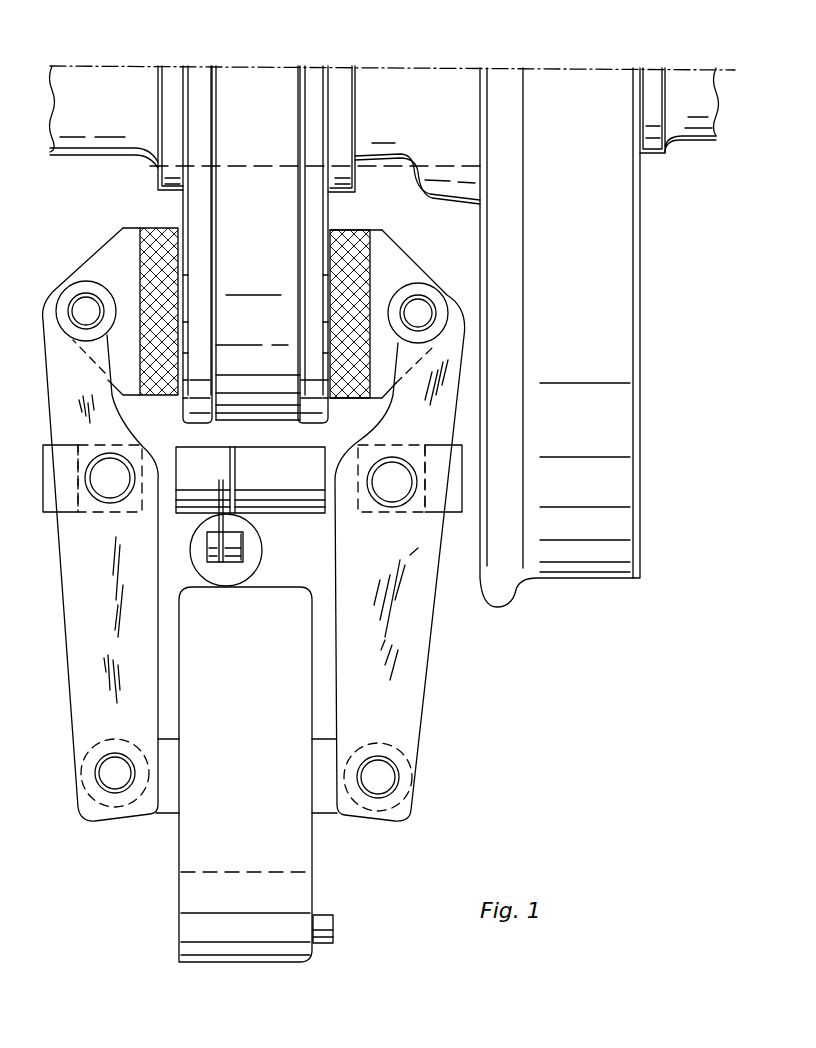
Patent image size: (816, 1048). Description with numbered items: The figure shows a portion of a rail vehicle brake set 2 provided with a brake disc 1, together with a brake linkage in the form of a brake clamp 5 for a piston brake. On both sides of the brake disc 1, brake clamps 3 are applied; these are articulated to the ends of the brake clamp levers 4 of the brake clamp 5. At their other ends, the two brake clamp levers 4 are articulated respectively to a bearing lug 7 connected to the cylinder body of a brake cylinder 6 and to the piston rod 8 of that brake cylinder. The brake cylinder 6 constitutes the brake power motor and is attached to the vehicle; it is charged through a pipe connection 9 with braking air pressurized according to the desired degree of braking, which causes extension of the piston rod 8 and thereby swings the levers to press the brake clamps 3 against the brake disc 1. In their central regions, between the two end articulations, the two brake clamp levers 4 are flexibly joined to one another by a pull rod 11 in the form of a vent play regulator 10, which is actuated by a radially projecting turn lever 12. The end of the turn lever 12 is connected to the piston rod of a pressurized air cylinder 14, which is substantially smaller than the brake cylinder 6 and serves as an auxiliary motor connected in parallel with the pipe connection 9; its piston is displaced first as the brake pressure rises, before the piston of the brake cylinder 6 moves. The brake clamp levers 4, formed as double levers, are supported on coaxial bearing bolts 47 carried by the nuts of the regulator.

The brake disc 1 is at (247, 187).
The rail vehicle brake set 2 is at (380, 103).
The brake clamps 3 is at (110, 253).
The brake clamp levers 4 is at (83, 650).
The brake clamp 5 is at (459, 627).
The brake cylinder 6 is at (190, 895).
The bearing lug 7 is at (323, 802).
The piston rod 8 is at (170, 802).
The pipe connection 9 is at (323, 915).
The vent play regulator 10 is at (258, 515).
The pull rod 11 is at (293, 525).
The turn lever 12 is at (223, 562).
The pressurized air cylinder 14 is at (247, 565).
The bearing bolts 47 is at (110, 490).